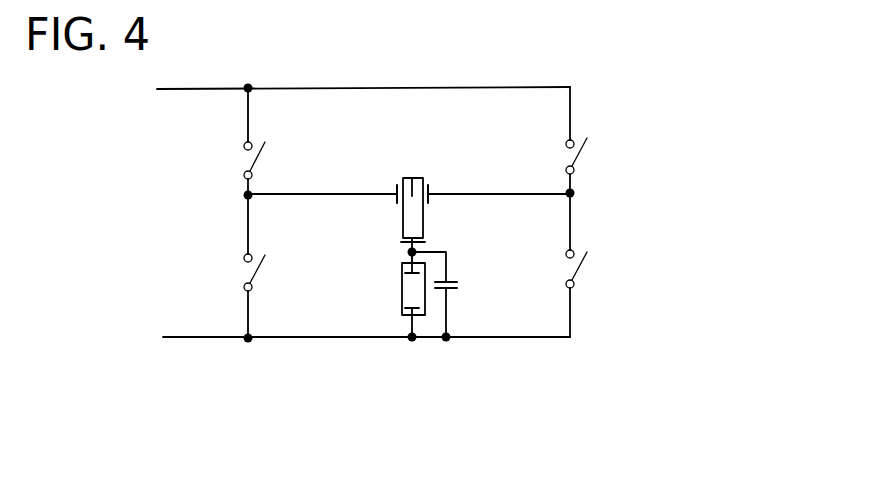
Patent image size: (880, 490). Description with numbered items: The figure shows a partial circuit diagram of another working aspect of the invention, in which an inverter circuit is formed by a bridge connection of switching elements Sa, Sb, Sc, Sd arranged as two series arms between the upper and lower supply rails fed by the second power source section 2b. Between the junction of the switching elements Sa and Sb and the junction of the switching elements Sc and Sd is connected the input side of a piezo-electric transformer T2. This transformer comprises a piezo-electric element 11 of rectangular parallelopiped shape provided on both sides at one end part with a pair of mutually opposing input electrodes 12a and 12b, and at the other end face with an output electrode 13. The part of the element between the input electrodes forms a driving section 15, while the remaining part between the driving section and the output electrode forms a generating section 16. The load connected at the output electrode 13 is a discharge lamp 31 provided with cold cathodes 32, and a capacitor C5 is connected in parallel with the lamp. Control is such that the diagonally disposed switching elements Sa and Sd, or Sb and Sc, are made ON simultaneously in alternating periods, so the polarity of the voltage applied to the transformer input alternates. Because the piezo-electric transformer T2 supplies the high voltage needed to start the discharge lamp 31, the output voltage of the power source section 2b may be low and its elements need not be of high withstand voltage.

The second power source section 2b is at (551, 338).
The switching element Sa is at (223, 160).
The switching element Sb is at (226, 273).
The switching element Sc is at (603, 157).
The switching element Sd is at (604, 269).
The piezo-electric transformer T2 is at (426, 189).
The driving section 15 is at (412, 178).
The input electrode 12a is at (396, 190).
The input electrode 12b is at (431, 190).
The generating section 16 is at (406, 216).
The piezo-electric element 11 is at (403, 233).
The output electrode 13 is at (420, 242).
The discharge lamp 31 is at (402, 302).
The cold cathodes 32 is at (404, 274).
The capacitor C5 is at (457, 294).